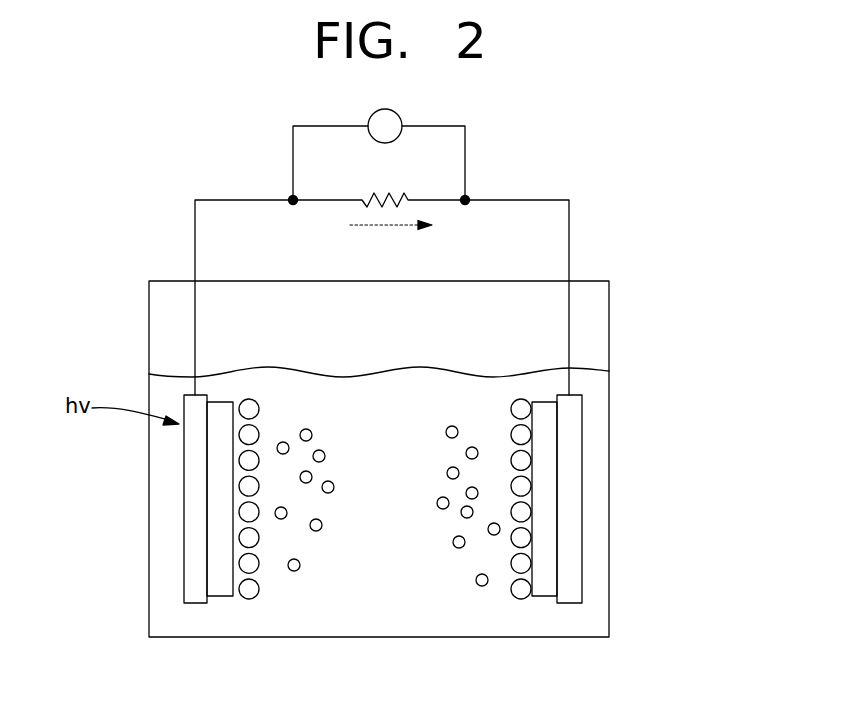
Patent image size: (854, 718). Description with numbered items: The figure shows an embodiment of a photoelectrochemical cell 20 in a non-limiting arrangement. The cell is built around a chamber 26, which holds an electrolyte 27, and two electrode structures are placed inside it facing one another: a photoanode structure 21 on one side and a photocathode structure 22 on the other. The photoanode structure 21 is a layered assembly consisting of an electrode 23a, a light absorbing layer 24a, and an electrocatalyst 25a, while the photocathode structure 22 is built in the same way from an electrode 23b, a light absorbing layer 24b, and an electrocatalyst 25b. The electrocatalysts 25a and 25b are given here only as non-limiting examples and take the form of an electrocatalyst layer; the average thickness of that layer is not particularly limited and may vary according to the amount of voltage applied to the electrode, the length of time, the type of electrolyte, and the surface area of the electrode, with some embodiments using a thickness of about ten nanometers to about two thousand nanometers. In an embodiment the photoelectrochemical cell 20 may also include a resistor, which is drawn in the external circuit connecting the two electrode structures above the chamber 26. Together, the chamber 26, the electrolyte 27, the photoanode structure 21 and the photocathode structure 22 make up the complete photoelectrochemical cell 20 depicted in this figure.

The photoelectrochemical cell 20 is at (648, 152).
The photoanode structure 21 is at (167, 545).
The photocathode structure 22 is at (605, 545).
The electrode 23a is at (193, 518).
The electrode 23b is at (578, 518).
The light absorbing layer 24a is at (218, 490).
The light absorbing layer 24b is at (552, 490).
The electrocatalyst 25a is at (247, 460).
The electrocatalyst 25b is at (523, 460).
The chamber 26 is at (610, 323).
The electrolyte 27 is at (385, 613).